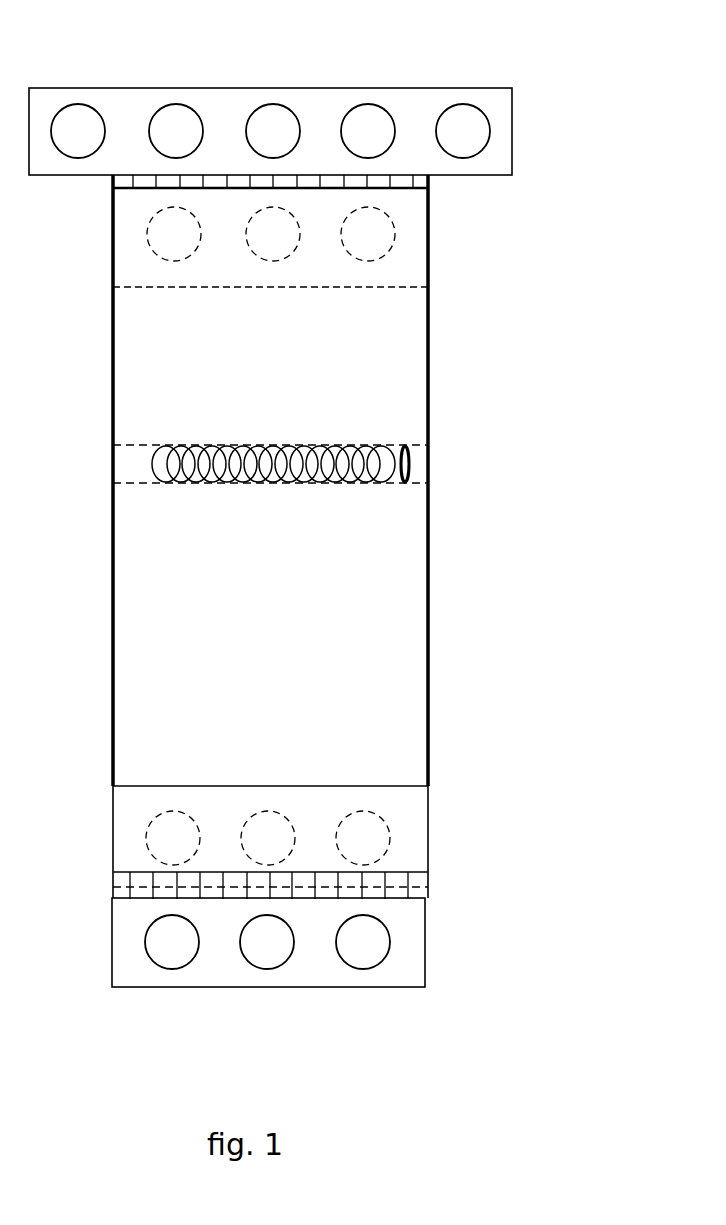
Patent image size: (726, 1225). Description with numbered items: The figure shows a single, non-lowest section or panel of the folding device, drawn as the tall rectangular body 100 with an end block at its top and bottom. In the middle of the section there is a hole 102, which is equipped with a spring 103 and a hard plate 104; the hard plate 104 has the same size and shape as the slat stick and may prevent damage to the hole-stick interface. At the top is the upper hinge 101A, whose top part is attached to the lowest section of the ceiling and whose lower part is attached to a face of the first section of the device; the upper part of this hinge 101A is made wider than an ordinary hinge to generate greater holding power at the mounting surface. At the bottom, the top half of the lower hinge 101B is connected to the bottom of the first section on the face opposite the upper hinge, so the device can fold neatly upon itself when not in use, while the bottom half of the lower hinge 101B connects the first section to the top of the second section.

The tube body 100 is at (271, 689).
The upper hinge 101A is at (403, 106).
The lower hinge 101B is at (405, 942).
The hole 102 is at (388, 449).
The spring 103 is at (344, 465).
The hard plate 104 is at (412, 467).